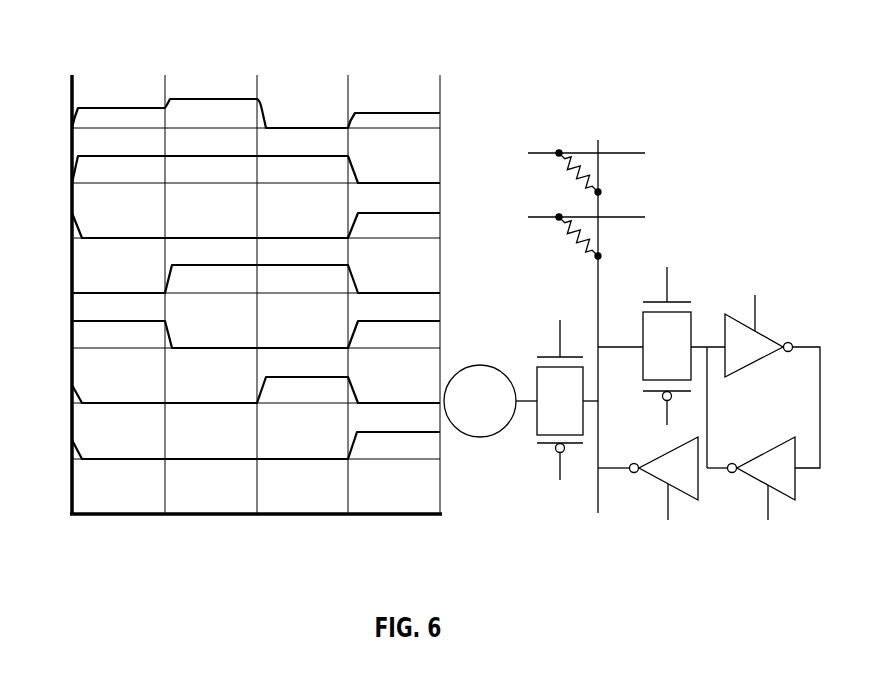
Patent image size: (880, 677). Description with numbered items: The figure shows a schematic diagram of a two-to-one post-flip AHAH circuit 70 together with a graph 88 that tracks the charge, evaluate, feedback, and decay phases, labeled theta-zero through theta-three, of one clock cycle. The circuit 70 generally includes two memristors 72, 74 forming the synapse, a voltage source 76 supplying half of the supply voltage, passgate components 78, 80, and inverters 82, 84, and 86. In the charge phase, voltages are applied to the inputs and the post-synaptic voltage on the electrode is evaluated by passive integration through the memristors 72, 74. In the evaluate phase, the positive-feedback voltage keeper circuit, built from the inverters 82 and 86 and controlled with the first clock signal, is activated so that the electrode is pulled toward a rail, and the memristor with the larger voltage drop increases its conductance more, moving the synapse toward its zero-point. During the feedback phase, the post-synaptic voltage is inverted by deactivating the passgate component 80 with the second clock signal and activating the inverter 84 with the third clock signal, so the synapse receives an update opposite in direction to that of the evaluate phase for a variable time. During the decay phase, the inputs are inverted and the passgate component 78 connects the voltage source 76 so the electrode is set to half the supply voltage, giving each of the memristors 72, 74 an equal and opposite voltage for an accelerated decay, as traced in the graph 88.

The graph 88 is at (103, 51).
The 2-1 post-flip AHAH circuit 70 is at (693, 149).
The memristor 72 is at (559, 178).
The memristor 74 is at (559, 242).
The voltage source 76 is at (481, 366).
The component 78 is at (529, 440).
The component 80 is at (698, 302).
The inverter 82 is at (782, 320).
The inverter 84 is at (650, 487).
The inverter 86 is at (751, 487).